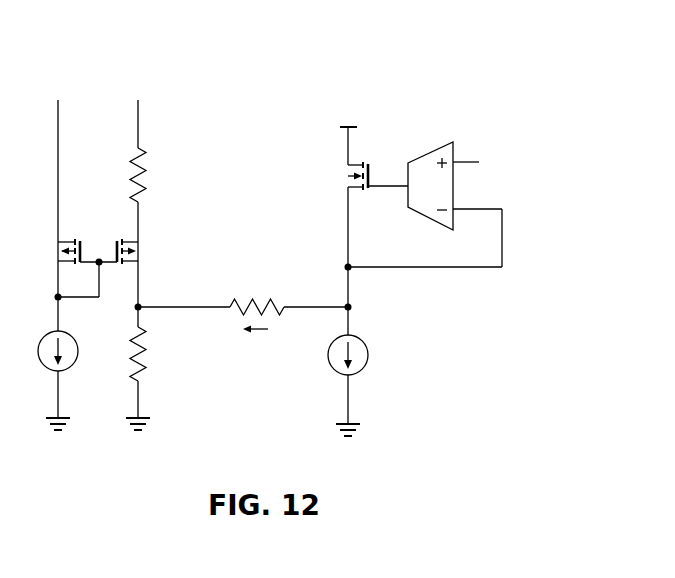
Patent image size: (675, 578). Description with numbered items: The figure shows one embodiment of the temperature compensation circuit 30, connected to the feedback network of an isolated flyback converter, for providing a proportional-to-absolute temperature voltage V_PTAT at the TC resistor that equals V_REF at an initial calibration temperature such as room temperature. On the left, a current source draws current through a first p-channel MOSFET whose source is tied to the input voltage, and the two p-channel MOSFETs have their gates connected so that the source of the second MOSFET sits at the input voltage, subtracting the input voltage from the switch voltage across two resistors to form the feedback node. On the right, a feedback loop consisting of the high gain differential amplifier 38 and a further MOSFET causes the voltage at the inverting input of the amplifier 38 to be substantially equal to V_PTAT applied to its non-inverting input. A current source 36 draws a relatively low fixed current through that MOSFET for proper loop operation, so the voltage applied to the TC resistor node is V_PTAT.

The temperature compensation circuit 30 is at (282, 245).
The current source 36 is at (365, 336).
The high gain differential amplifier 38 is at (430, 153).